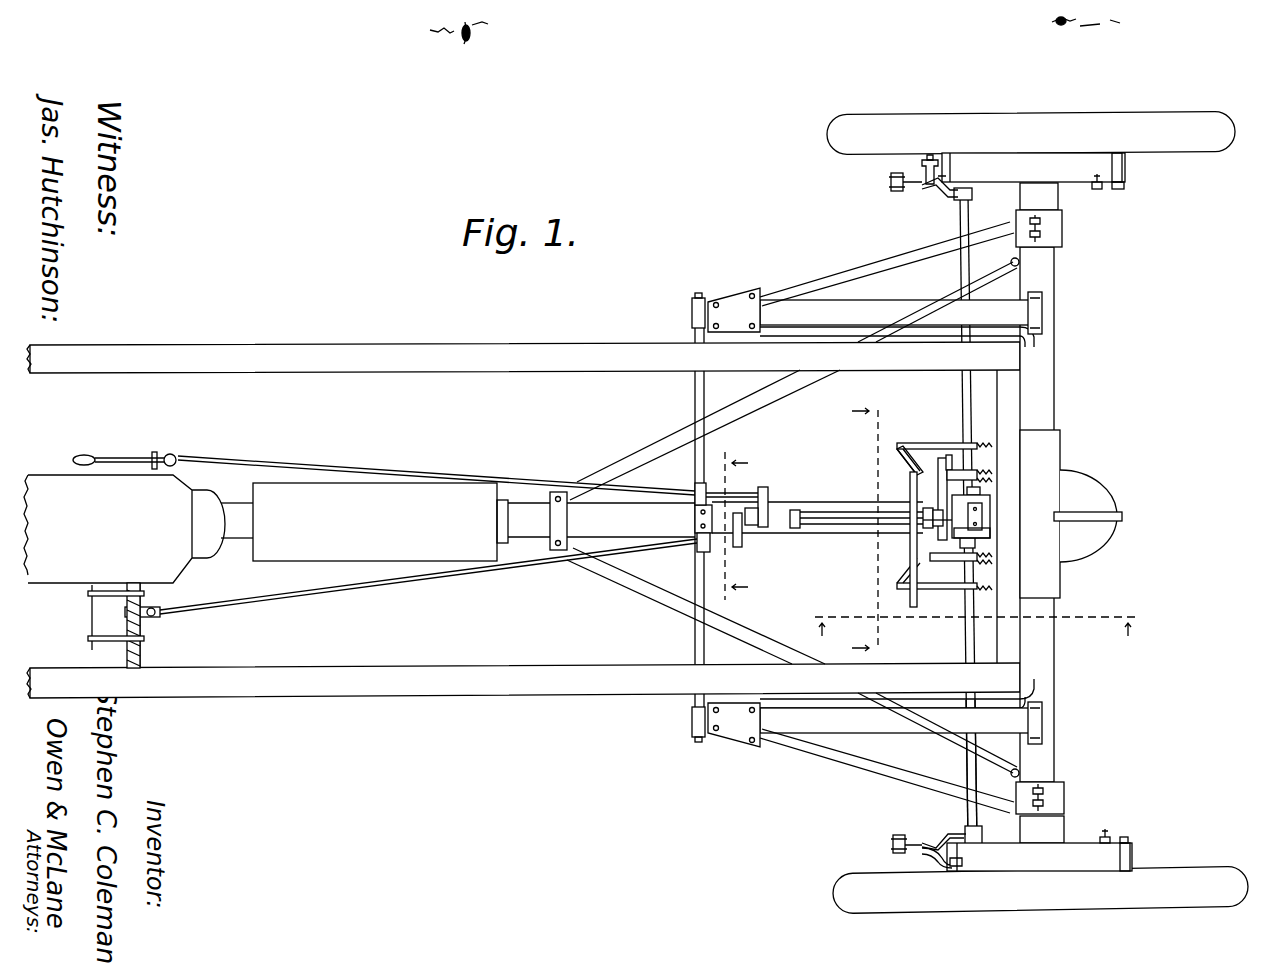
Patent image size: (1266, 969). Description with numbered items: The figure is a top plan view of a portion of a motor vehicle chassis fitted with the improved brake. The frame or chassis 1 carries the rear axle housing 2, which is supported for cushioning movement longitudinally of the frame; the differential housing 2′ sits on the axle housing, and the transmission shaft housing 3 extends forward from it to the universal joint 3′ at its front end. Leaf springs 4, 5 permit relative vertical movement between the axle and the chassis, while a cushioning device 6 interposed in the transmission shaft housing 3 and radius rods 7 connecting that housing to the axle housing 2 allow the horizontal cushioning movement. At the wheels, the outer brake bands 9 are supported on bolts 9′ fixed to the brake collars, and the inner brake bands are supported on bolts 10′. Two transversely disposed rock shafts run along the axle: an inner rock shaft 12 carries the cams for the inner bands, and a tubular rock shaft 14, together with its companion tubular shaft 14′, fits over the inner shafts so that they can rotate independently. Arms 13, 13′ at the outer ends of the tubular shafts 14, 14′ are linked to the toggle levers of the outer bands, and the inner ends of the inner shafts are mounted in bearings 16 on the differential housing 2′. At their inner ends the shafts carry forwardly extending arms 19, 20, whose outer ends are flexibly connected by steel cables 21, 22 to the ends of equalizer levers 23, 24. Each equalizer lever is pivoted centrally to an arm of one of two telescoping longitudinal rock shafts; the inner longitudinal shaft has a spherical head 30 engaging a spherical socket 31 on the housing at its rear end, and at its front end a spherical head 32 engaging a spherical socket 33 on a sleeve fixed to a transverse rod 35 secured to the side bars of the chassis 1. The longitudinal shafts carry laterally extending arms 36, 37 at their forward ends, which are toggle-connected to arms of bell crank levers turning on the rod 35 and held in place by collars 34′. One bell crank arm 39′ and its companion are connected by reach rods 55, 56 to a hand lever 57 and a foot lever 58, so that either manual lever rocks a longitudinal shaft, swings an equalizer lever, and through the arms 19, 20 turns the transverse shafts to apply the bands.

The frame or chassis 1 is at (502, 372).
The rear axle housing 2 is at (1048, 353).
The differential housing 2′ is at (1086, 498).
The transmission shaft housing 3 is at (819, 507).
The universal joint 3′ is at (222, 512).
The leaf spring 4 is at (923, 517).
The leaf spring 5 is at (889, 517).
The cushioning device 6 is at (380, 522).
The radius rods 7 is at (758, 399).
The brake bands 9 is at (1126, 198).
The bolts 9′ is at (1128, 838).
The bolts 10′ is at (1097, 191).
The transverse rock shaft 12 is at (978, 491).
The arm 13 is at (942, 194).
The arm 13′ is at (952, 836).
The tubular transverse rock shaft 14 is at (960, 227).
The tubular transverse rock shaft 14′ is at (964, 806).
The bearings 16 is at (986, 496).
The forwardly extending arm 19 is at (956, 478).
The forwardly extending arm 20 is at (932, 441).
The steel rod or cable 21 is at (944, 470).
The steel rod or cable 22 is at (909, 467).
The equalizer lever 23 is at (946, 490).
The equalizer lever 24 is at (910, 490).
The spherical head 30 is at (992, 531).
The spherical socket 31 is at (984, 521).
The spherical head 32 is at (694, 515).
The spherical socket 33 is at (702, 536).
The collars 34′ is at (697, 486).
The transverse rod 35 is at (696, 574).
The arm 36 is at (743, 537).
The arm 37 is at (769, 500).
The arm of bell crank lever 39′ is at (735, 491).
The reach rod 55 is at (336, 584).
The reach rod 56 is at (306, 470).
The hand lever 57 is at (119, 460).
The foot lever 58 is at (107, 601).